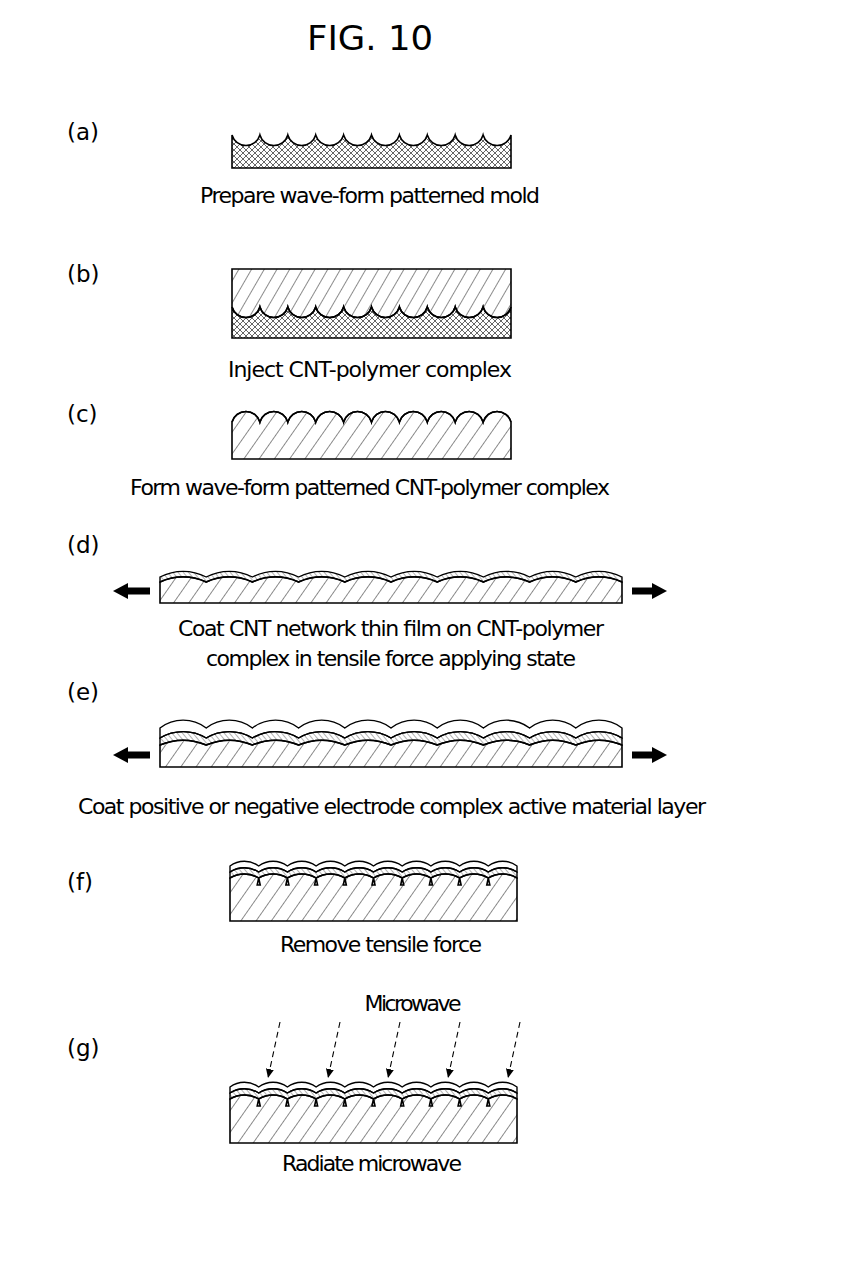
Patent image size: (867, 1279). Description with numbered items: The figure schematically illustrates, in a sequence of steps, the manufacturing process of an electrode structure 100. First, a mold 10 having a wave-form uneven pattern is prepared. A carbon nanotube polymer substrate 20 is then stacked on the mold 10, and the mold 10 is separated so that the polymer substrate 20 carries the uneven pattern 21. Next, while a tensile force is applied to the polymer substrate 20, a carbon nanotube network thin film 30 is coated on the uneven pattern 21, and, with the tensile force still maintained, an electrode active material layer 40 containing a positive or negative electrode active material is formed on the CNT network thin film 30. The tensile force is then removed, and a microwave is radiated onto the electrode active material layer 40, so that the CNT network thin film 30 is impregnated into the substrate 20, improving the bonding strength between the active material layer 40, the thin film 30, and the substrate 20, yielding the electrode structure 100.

The mold 10 is at (512, 153).
The carbon nanotube polymer substrate 20 is at (512, 284).
The uneven pattern 21 is at (506, 413).
The carbon nanotube network thin film 30 is at (607, 571).
The electrode active material layer 40 is at (601, 731).
The electrode structure 100 is at (571, 1066).